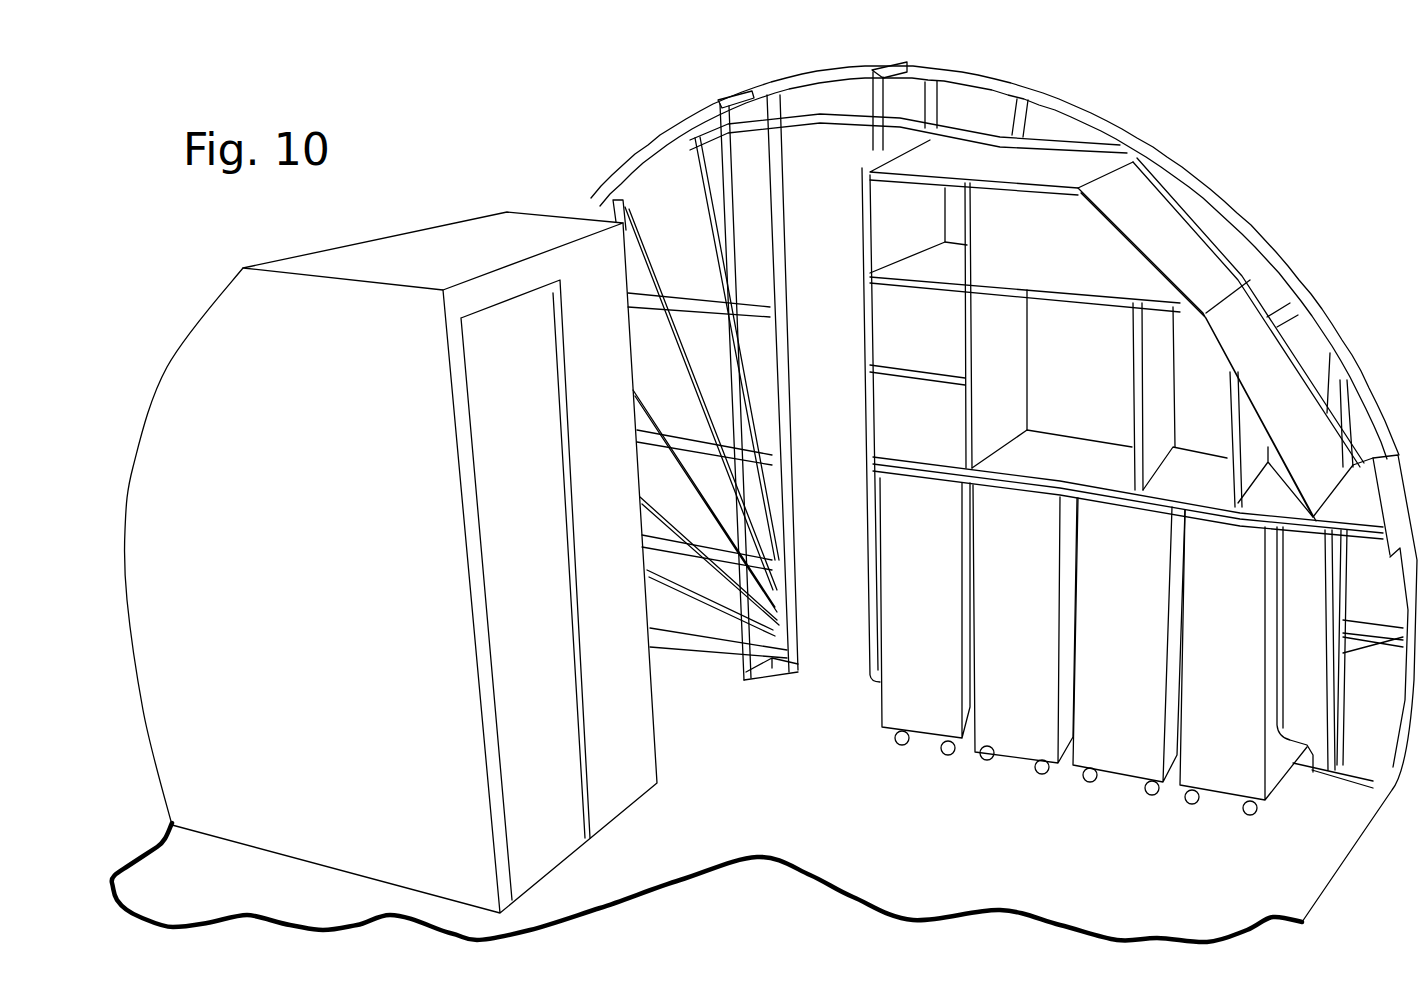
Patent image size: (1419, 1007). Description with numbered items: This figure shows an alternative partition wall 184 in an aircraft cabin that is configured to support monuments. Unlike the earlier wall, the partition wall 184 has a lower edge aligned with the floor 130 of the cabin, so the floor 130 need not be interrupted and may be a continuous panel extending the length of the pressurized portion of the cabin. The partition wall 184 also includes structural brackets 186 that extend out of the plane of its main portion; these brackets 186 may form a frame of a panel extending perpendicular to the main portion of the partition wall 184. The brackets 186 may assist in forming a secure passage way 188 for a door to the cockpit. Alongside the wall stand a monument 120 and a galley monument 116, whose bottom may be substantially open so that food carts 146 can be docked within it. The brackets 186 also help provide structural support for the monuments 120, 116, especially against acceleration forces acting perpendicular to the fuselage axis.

The galley monument 116 is at (1153, 213).
The monument 120 is at (338, 625).
The floor 130 is at (817, 813).
The food carts 146 is at (922, 682).
The partition wall 184 is at (1030, 98).
The structural brackets 186 is at (727, 173).
The passage way 188 is at (818, 223).